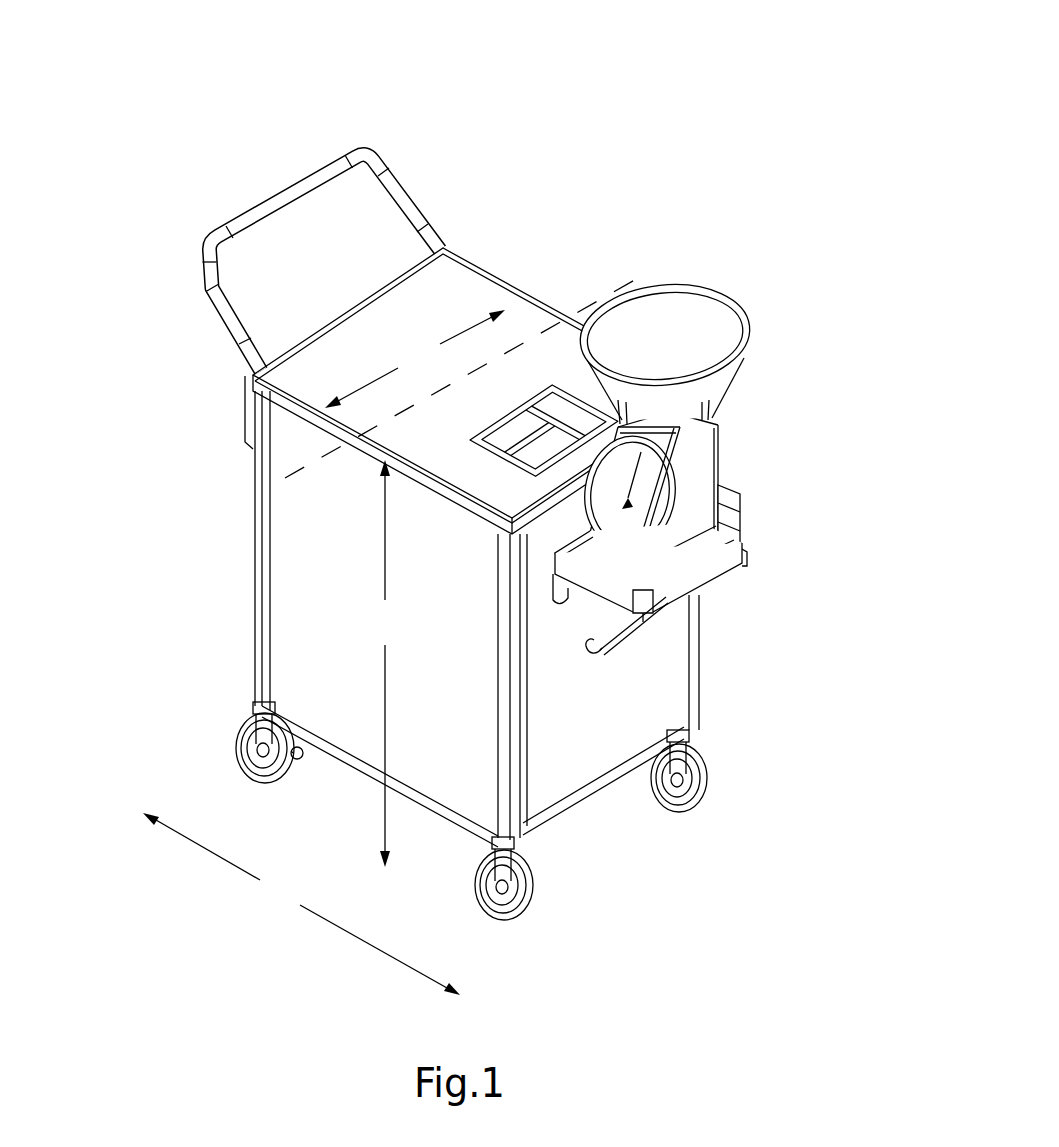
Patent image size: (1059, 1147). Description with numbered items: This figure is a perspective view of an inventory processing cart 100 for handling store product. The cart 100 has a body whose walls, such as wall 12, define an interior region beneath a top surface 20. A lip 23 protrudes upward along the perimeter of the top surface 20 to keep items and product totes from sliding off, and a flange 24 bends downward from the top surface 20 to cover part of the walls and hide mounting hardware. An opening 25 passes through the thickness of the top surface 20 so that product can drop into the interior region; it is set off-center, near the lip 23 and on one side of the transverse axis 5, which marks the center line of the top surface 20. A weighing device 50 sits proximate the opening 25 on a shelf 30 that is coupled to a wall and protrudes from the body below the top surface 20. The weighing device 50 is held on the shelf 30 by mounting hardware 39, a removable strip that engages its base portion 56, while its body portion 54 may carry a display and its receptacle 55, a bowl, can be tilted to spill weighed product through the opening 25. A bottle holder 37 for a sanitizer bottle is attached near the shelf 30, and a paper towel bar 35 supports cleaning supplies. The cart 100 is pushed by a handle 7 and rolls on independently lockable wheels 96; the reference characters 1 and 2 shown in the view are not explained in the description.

The inventory processing cart 100 is at (702, 122).
The cart 1 is at (166, 383).
The cart base 2 is at (164, 748).
The transverse axis 5 is at (593, 292).
The handle 7 is at (245, 221).
The wall 12 is at (577, 750).
The top surface 20 is at (453, 287).
The lip 23 is at (490, 275).
The flange 24 is at (313, 412).
The opening 25 is at (563, 403).
The shelf 30 is at (722, 570).
The paper towel bar 35 is at (617, 642).
The bottle holder 37 is at (735, 527).
The mounting hardware 39 is at (653, 600).
The weighing device 50 is at (707, 473).
The body portion of the weighing device 54 is at (688, 529).
The receptacle 55 is at (716, 331).
The base portion 56 is at (742, 549).
The wheels 96 is at (257, 778).